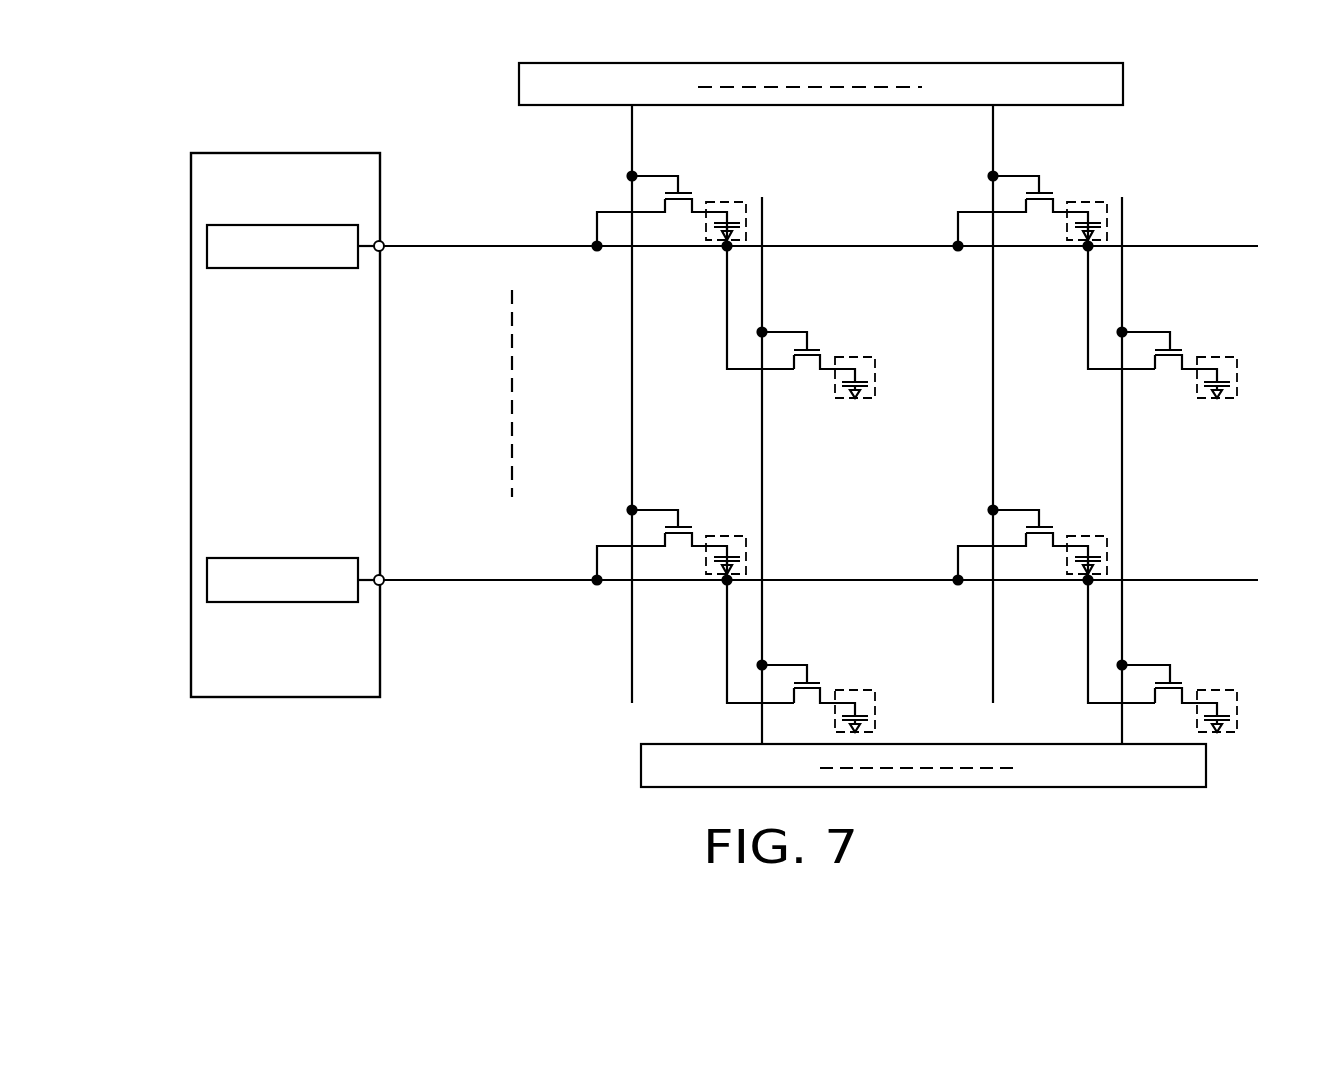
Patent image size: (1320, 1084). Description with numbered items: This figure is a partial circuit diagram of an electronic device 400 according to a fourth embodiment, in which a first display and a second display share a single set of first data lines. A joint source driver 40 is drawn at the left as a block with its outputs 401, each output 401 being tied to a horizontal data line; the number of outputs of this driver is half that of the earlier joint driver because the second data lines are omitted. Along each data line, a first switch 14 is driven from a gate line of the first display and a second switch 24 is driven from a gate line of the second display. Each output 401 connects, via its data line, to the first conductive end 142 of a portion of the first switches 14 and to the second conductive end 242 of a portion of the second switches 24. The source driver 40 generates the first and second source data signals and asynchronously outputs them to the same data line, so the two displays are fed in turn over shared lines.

The electronic device 400 is at (268, 58).
The joint source driver 40 is at (276, 153).
The output 401 is at (384, 575).
The first switch 14 is at (817, 376).
The first conductive end 142 is at (610, 212).
The second switch 24 is at (942, 493).
The second conductive end 242 is at (748, 372).